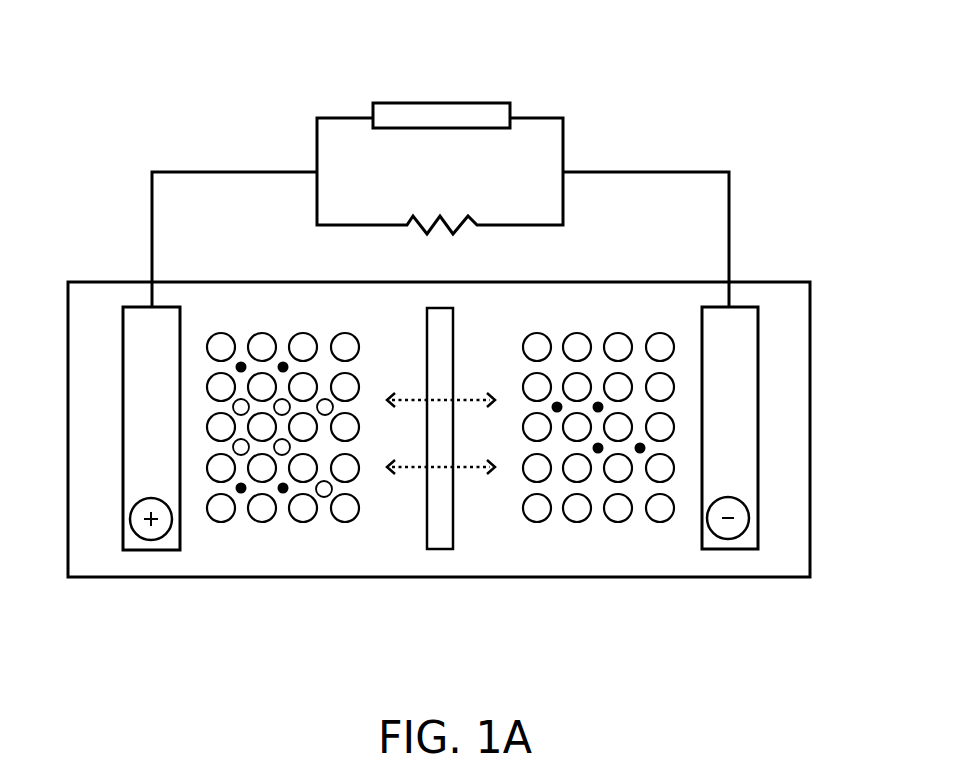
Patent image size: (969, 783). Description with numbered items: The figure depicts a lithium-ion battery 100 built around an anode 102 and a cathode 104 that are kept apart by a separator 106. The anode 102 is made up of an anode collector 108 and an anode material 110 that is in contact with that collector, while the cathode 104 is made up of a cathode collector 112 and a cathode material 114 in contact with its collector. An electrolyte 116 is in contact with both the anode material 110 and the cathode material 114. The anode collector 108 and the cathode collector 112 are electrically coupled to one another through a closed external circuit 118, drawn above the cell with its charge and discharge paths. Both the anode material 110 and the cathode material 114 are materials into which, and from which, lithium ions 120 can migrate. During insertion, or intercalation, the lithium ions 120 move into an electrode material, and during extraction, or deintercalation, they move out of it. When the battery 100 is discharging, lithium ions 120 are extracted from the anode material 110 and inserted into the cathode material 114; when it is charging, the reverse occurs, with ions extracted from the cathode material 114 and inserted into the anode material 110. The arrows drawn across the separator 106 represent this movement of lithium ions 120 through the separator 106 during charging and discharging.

The lithium-ion battery 100 is at (235, 107).
The anode 102 is at (603, 561).
The cathode 104 is at (262, 561).
The separator 106 is at (437, 552).
The anode collector 108 is at (740, 305).
The anode material 110 is at (578, 322).
The cathode collector 112 is at (145, 307).
The cathode material 114 is at (317, 315).
The electrolyte 116 is at (520, 318).
The closed external circuit 118 is at (720, 170).
The lithium ions 120 is at (557, 412).